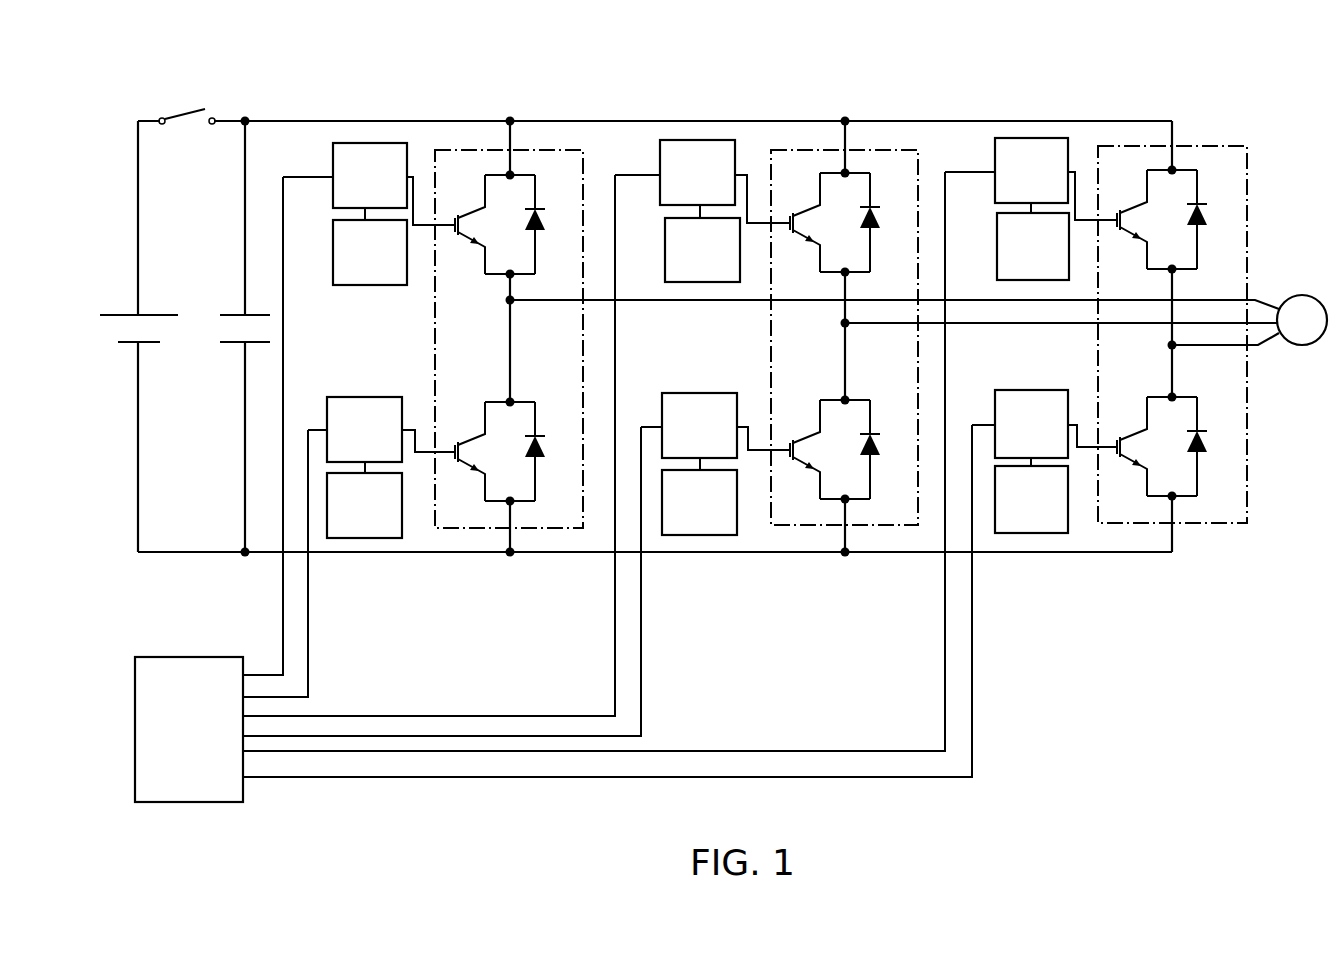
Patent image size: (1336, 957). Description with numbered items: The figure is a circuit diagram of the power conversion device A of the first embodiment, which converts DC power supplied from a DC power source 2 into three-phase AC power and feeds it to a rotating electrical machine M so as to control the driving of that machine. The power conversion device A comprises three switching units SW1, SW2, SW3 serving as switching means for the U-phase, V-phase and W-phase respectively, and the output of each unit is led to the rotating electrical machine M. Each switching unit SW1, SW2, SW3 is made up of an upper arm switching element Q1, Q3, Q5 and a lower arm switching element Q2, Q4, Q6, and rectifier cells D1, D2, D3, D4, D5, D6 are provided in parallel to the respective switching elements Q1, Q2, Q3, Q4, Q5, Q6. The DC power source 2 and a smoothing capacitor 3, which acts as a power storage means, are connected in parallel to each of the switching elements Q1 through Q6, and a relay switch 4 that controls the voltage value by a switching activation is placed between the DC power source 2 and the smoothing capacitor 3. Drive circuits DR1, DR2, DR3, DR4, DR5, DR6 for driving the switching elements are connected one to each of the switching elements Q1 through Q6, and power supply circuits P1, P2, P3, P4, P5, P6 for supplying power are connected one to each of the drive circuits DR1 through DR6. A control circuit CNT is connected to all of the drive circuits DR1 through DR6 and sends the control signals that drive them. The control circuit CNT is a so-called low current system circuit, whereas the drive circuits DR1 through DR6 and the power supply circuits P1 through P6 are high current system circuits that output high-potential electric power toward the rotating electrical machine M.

The power conversion device A is at (738, 95).
The DC power source 2 is at (133, 315).
The smoothing capacitor 3 is at (238, 315).
The relay switch 4 is at (182, 111).
The control circuit CNT is at (165, 656).
The rotating electrical machine M is at (1302, 320).
The switching unit SW1 is at (560, 150).
The switching unit SW2 is at (888, 150).
The switching unit SW3 is at (1197, 146).
The upper arm switching element Q1 is at (462, 233).
The lower arm switching element Q2 is at (464, 461).
The upper arm switching element Q3 is at (798, 232).
The lower arm switching element Q4 is at (800, 458).
The upper arm switching element Q5 is at (1126, 231).
The lower arm switching element Q6 is at (1127, 457).
The rectifier cell D1 is at (551, 222).
The rectifier cell D2 is at (551, 449).
The rectifier cell D3 is at (886, 221).
The rectifier cell D4 is at (887, 448).
The rectifier cell D5 is at (1213, 217).
The rectifier cell D6 is at (1213, 444).
The drive circuit DR1 is at (333, 160).
The drive circuit DR2 is at (352, 397).
The drive circuit DR3 is at (660, 160).
The drive circuit DR4 is at (682, 393).
The drive circuit DR5 is at (995, 158).
The drive circuit DR6 is at (1012, 390).
The power supply circuit P1 is at (355, 286).
The power supply circuit P2 is at (360, 540).
The power supply circuit P3 is at (665, 270).
The power supply circuit P4 is at (688, 537).
The power supply circuit P5 is at (995, 268).
The power supply circuit P6 is at (1020, 535).